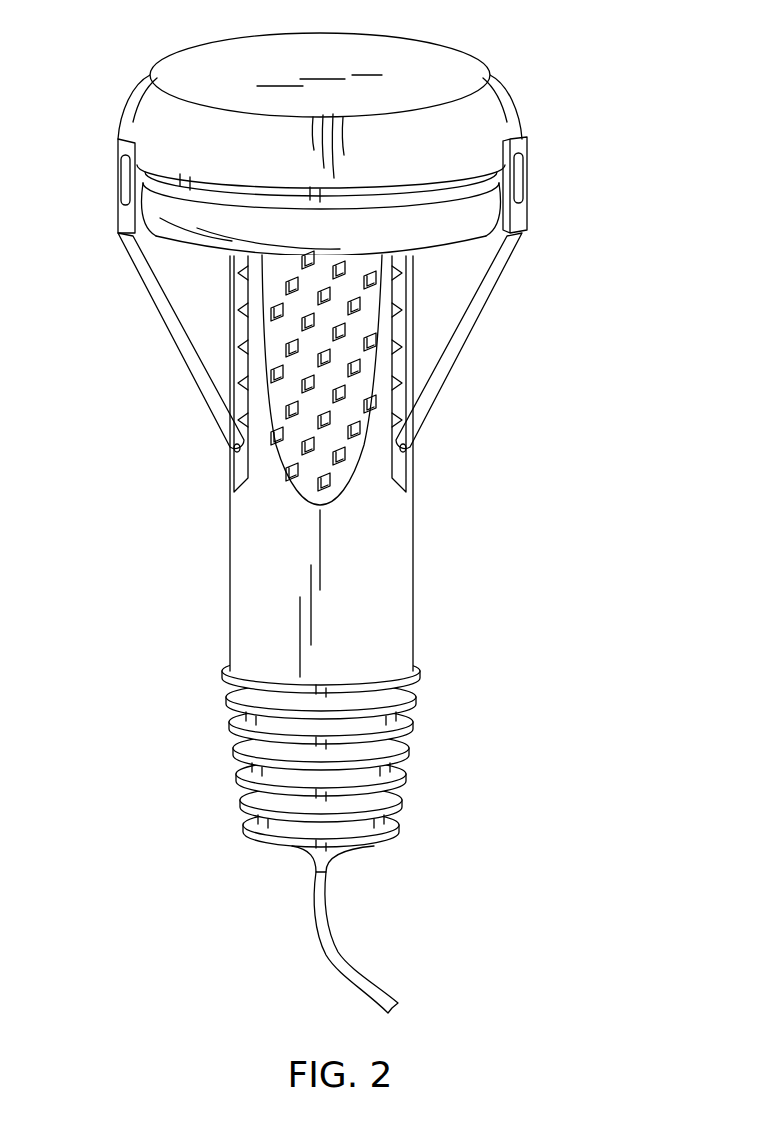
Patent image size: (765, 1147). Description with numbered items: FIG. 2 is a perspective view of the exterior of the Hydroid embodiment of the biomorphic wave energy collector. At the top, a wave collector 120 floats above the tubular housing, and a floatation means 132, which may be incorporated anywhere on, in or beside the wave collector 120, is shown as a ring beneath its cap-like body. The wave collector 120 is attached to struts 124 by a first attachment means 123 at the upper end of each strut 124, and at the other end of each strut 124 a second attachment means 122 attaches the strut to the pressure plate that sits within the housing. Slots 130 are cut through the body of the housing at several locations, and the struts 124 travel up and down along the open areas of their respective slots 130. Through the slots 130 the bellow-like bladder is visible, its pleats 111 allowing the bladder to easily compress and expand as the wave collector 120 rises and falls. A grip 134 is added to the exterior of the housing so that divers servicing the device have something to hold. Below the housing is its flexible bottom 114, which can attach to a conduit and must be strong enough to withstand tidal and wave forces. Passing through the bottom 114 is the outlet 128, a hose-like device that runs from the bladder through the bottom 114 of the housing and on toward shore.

The pleats 111 is at (404, 277).
The flexible bottom 114 is at (414, 720).
The wave collector 120 is at (496, 103).
The second attachment means 122 is at (412, 449).
The first attachment means 123 is at (530, 148).
The strut 124 is at (490, 273).
The outlet 128 is at (388, 989).
The slots 130 is at (402, 397).
The floatation means 132 is at (496, 205).
The grip 134 is at (297, 457).